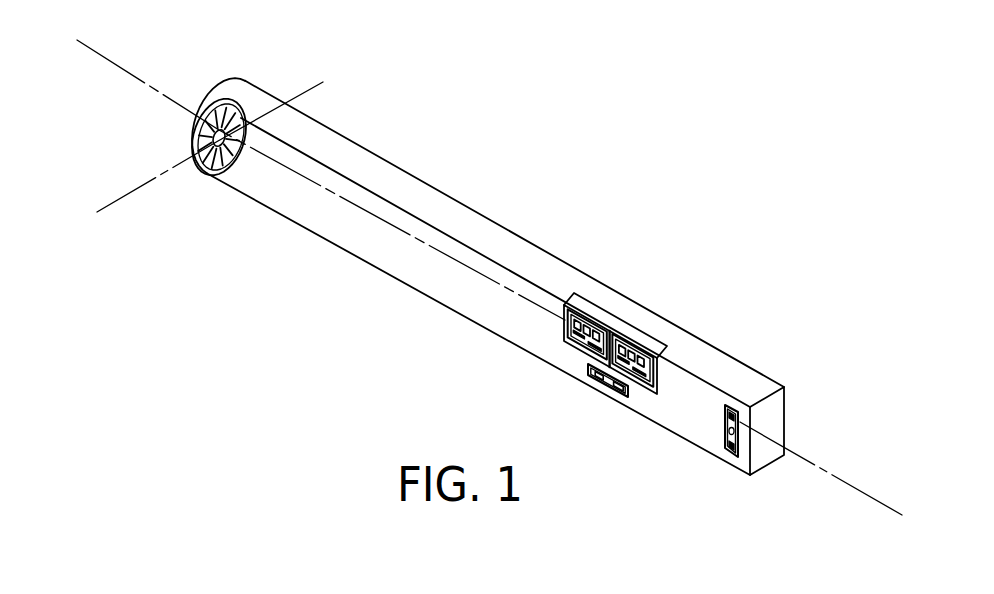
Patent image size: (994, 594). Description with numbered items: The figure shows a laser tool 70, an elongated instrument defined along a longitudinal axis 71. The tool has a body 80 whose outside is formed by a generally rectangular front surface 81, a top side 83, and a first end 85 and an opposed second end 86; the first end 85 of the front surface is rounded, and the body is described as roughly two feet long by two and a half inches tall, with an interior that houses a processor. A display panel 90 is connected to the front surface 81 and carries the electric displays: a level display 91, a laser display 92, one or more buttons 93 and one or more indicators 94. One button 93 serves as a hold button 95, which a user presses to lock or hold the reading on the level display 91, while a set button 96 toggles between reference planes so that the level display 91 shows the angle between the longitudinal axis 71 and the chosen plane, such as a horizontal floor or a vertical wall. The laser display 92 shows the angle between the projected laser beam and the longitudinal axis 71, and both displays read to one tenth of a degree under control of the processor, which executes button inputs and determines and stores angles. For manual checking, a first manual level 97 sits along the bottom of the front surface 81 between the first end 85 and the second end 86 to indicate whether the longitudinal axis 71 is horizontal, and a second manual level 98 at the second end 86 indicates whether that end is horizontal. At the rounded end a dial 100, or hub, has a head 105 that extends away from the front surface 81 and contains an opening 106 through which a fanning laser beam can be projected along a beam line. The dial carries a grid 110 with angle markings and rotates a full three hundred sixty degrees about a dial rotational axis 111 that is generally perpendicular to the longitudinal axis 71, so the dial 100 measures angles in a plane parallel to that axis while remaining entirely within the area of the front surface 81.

The laser tool 70 is at (542, 203).
The longitudinal axis 71 is at (837, 475).
The body 80 is at (440, 208).
The front surface 81 is at (423, 267).
The top side 83 is at (358, 157).
The first end 85 is at (221, 92).
The second end 86 is at (770, 410).
The display panel 90 is at (633, 330).
The level display 91 is at (565, 340).
The laser display 92 is at (660, 373).
The button 93 is at (631, 385).
The indicator 94 is at (590, 318).
The hold button 95 is at (583, 354).
The set button 96 is at (628, 388).
The first manual level 97 is at (593, 382).
The second manual level 98 is at (752, 452).
The dial 100 is at (207, 167).
The head 105 is at (221, 134).
The opening 106 is at (210, 134).
The grid 110 is at (224, 180).
The dial rotational axis 111 is at (142, 183).